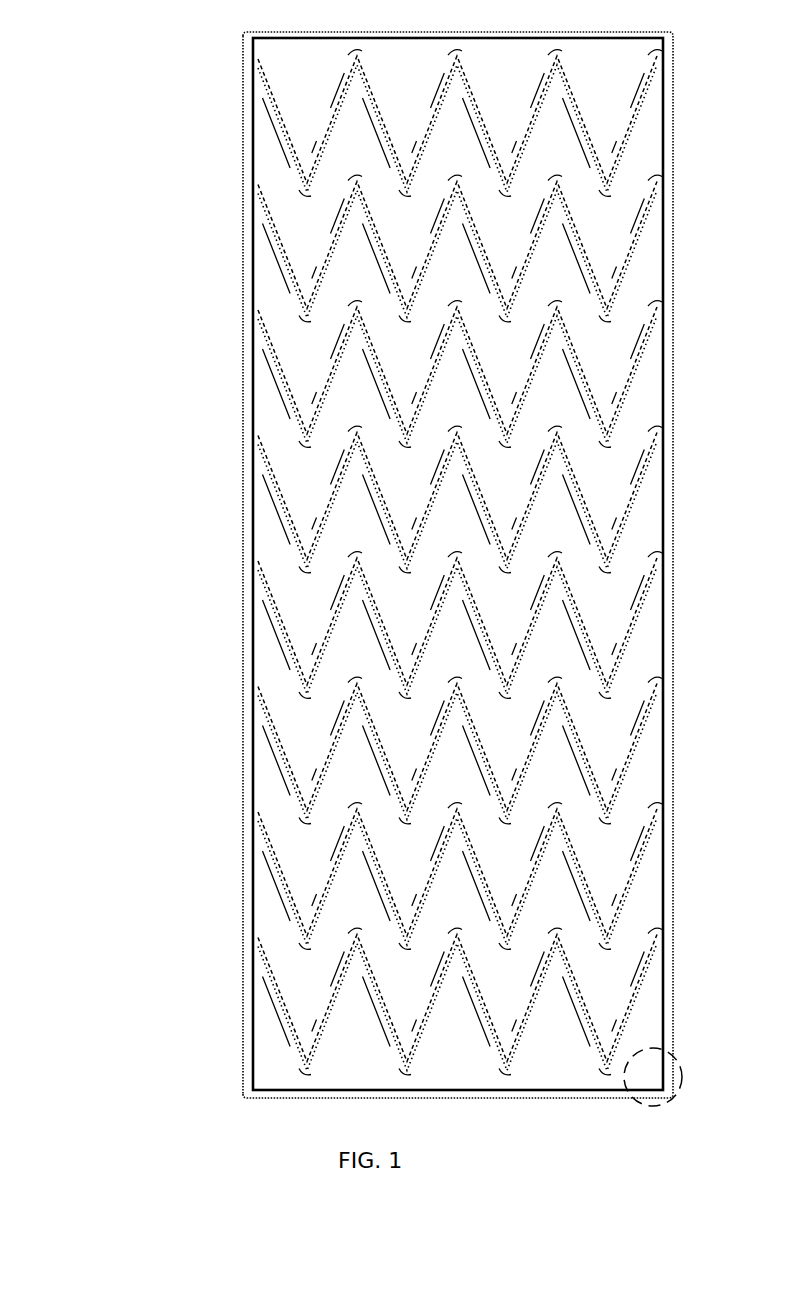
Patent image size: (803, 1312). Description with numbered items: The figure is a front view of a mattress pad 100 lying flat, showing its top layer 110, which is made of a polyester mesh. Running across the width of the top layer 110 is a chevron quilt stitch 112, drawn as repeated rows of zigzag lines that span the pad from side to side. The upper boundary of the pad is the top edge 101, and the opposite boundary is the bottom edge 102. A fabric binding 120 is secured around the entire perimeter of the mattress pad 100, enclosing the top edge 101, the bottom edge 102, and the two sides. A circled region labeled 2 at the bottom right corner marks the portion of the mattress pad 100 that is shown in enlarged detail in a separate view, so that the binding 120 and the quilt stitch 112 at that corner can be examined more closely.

The mattress pad 100 is at (133, 72).
The top edge 101 is at (278, 30).
The bottom edge 102 is at (277, 1097).
The top layer 110 is at (276, 294).
The chevron quilt stitch 112 is at (282, 371).
The fabric binding 120 is at (248, 597).
The detail region of FIG. 2 is at (683, 1066).